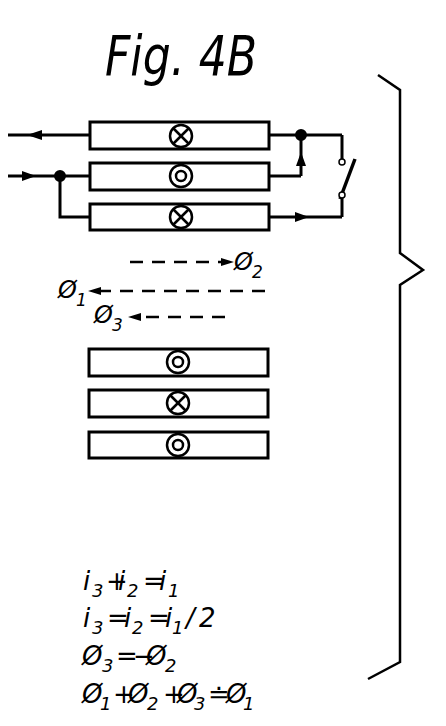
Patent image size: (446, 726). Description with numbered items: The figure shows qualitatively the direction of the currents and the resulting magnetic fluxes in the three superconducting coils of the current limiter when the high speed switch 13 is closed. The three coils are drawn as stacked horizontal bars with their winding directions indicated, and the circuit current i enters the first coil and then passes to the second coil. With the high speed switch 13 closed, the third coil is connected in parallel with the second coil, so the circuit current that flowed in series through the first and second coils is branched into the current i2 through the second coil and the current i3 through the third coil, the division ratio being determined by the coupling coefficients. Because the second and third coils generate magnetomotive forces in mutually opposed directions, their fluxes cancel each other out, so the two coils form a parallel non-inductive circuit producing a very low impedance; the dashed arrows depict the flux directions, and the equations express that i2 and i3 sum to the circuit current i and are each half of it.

The high speed switch 13 is at (352, 178).
The circuit current i is at (49, 159).
The current in second superconducting coil i2 is at (305, 156).
The current in third superconducting coil i3 is at (305, 228).